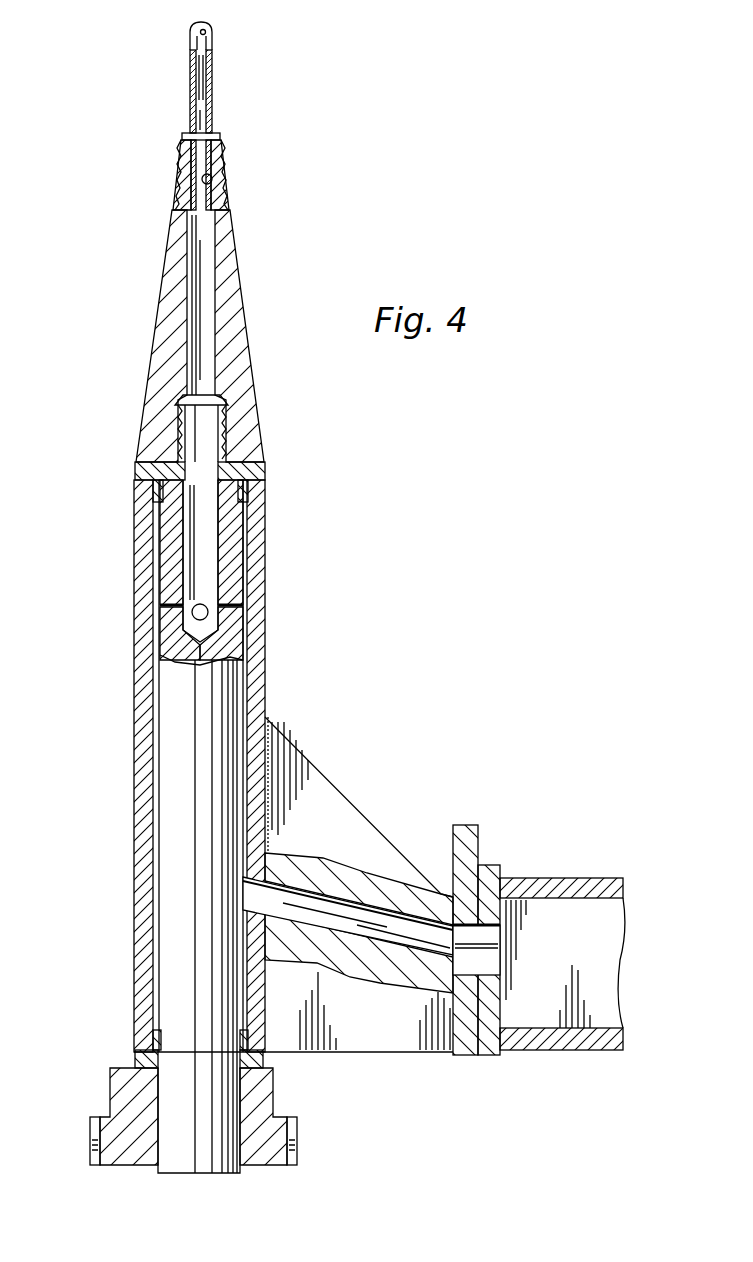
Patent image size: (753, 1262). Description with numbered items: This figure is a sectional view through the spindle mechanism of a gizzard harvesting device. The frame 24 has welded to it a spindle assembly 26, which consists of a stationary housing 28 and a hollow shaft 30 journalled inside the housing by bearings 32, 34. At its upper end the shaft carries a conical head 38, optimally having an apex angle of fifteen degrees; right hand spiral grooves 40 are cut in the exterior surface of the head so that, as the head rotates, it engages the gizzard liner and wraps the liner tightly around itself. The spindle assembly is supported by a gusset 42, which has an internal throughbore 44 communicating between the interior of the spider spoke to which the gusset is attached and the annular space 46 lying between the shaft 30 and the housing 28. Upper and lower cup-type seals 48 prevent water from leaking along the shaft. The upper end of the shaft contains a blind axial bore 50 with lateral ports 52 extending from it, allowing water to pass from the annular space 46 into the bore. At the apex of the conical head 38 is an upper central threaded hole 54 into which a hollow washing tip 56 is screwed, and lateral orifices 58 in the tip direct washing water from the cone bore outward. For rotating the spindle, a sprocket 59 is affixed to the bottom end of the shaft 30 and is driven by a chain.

The frame 24 is at (482, 850).
The spindle assembly 26 is at (275, 690).
The stationary housing 28 is at (140, 733).
The hollow shaft 30 is at (170, 818).
The bearing 32 is at (135, 1048).
The bearing 34 is at (135, 483).
The conical head 38 is at (151, 374).
The right hand spiral grooves 40 is at (170, 180).
The gusset 42 is at (376, 1039).
The internal throughbore 44 is at (320, 898).
The annular space 46 is at (268, 755).
The cup-type seals 48 is at (258, 494).
The blind axial bore 50 is at (212, 553).
The lateral ports 52 is at (192, 612).
The threaded hole 54 is at (209, 181).
The hollow washing tip 56 is at (213, 44).
The lateral orifices 58 is at (213, 30).
The sprocket 59 is at (297, 1125).